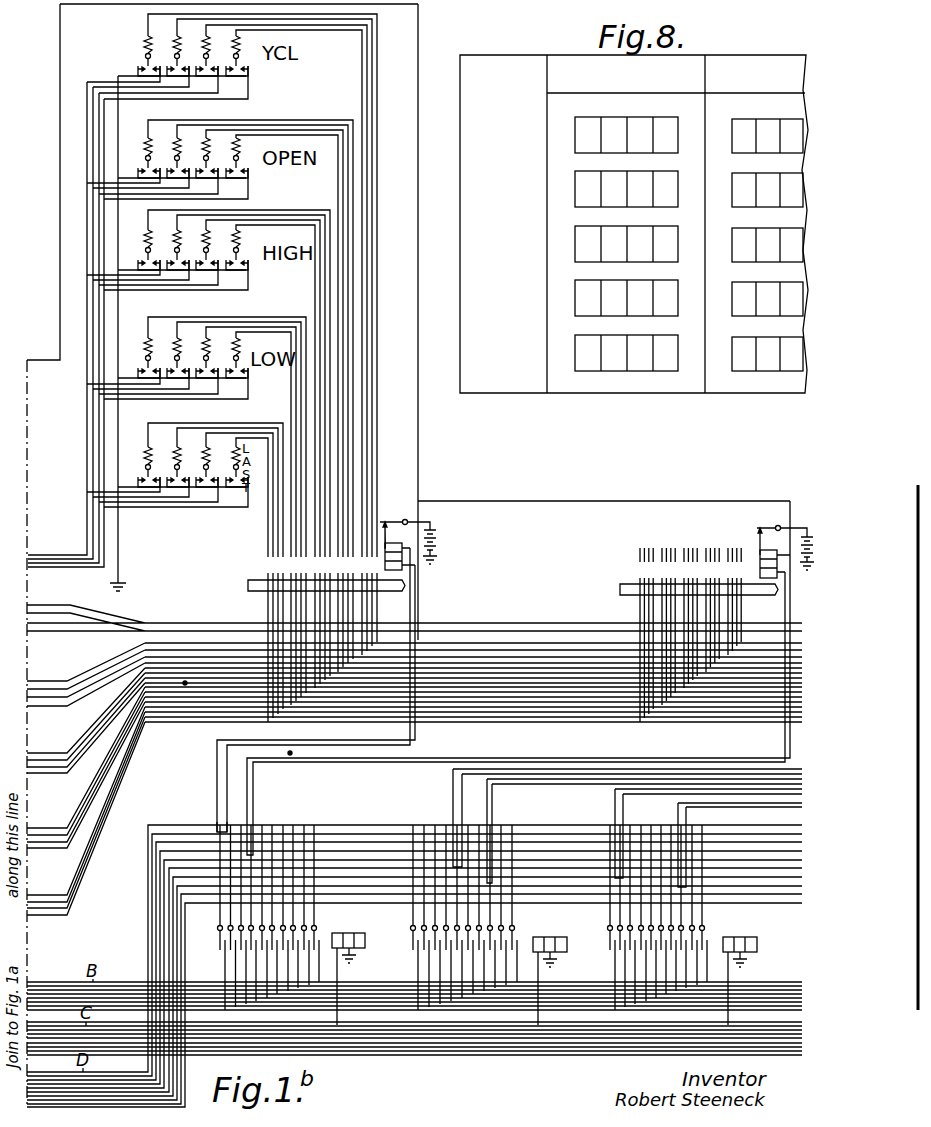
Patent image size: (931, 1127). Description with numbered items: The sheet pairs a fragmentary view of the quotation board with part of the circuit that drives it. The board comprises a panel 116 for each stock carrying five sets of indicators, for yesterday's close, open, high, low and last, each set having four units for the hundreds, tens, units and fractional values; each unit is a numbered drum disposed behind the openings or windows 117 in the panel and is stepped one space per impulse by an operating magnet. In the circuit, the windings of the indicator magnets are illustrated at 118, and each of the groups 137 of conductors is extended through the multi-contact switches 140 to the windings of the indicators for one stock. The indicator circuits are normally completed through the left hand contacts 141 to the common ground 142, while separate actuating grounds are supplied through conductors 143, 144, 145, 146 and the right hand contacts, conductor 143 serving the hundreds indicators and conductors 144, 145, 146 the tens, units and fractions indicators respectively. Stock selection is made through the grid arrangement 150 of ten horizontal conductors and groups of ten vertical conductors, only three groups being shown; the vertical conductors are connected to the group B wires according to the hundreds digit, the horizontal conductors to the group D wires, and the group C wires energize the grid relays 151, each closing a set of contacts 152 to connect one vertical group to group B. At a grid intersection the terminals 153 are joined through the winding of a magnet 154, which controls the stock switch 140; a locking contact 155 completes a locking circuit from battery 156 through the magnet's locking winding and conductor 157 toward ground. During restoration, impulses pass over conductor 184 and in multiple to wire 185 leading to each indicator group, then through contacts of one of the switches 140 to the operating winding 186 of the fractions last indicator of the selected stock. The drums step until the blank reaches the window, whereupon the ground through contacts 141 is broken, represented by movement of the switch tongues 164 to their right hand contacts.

In FIG. 1B, the windings of the indicator magnets 118 is at (143, 38).
In FIG. 1B, the left hand contacts 141 is at (141, 66).
In FIG. 1B, the switch tongues 164 is at (262, 285).
In FIG. 1B, the conductor 143 is at (87, 385).
In FIG. 1B, the conductor 144 is at (93, 408).
In FIG. 1B, the conductor 145 is at (99, 431).
In FIG. 1B, the conductor 146 is at (104, 452).
In FIG. 1B, the operating winding of the fractions last indicator unit 186 is at (234, 478).
In FIG. 1B, the common ground 142 is at (126, 587).
In FIG. 1B, the groups 137 is at (50, 614).
In FIG. 1B, the multi-contact switches 140 is at (263, 569).
In FIG. 1B, the wire 185 is at (262, 594).
In FIG. 1B, the conductor 157 is at (418, 460).
In FIG. 1B, the locking contact 155 is at (389, 522).
In FIG. 1B, the battery 156 is at (438, 546).
In FIG. 1B, the magnet 154 is at (420, 560).
In FIG. 1B, the grid intersection terminals 153 is at (217, 822).
In FIG. 1B, the grid arrangement 150 is at (294, 825).
In FIG. 1B, the contacts 152 is at (214, 942).
In FIG. 1B, the grid relays 151 is at (366, 941).
In FIG. 1B, the conductor 184 is at (75, 899).
In FIG. 8, the panel 116 is at (561, 400).
In FIG. 8, the openings or windows 117 is at (633, 395).